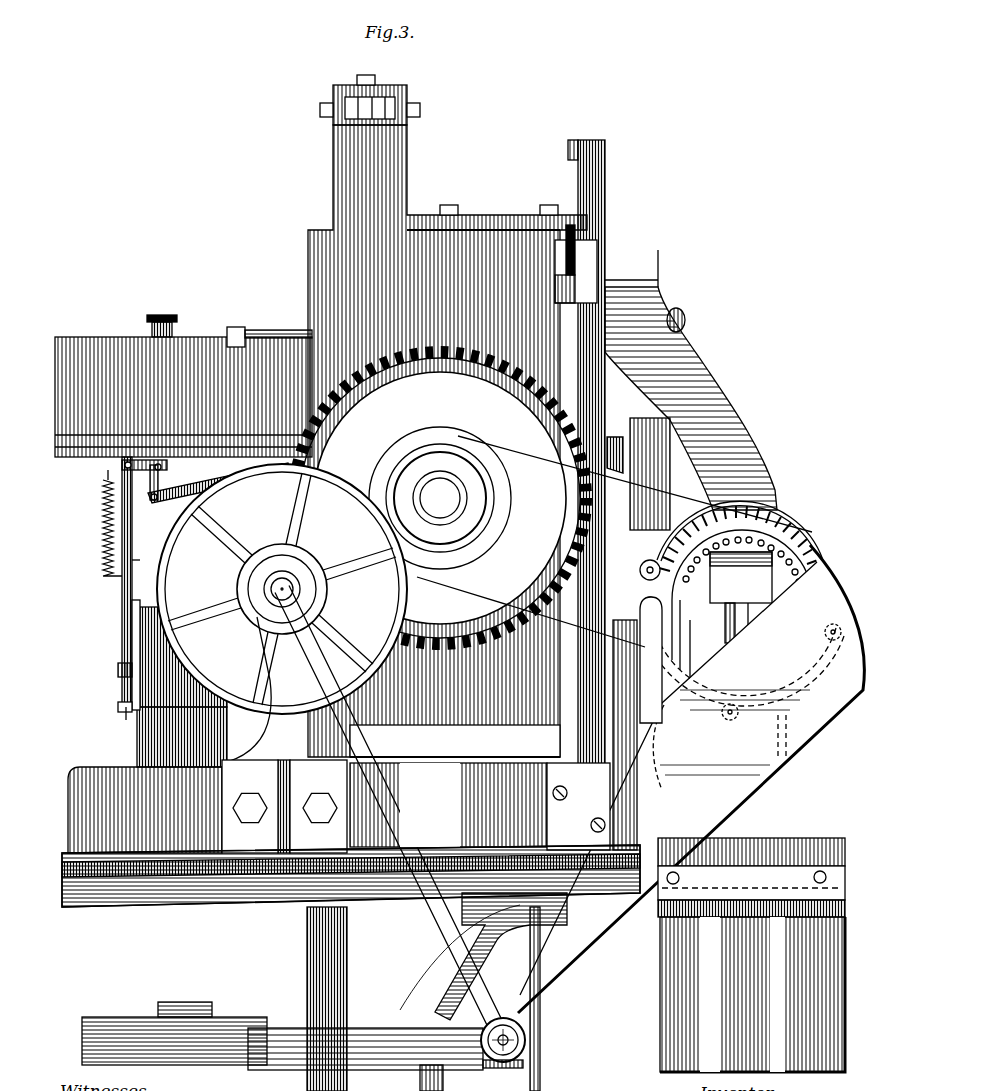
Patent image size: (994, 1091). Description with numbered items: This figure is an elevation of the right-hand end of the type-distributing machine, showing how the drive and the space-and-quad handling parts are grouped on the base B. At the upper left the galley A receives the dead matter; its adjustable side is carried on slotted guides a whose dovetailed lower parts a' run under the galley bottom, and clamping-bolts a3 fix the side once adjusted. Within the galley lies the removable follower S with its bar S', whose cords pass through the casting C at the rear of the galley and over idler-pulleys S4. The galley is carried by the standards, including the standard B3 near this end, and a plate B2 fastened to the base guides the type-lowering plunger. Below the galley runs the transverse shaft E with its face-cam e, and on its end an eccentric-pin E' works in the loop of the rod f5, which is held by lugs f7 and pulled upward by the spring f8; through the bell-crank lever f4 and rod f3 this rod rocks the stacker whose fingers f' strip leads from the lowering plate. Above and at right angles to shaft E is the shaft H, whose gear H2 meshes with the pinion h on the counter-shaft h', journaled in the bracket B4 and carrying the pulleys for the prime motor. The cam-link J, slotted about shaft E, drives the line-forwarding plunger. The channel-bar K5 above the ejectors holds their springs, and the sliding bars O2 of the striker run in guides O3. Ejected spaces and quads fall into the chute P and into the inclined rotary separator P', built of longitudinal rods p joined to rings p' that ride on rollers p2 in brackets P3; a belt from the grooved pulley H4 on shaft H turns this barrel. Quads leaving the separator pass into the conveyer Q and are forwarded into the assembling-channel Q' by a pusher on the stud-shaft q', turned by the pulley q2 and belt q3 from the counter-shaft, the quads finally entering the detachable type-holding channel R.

The gear H2 is at (432, 660).
The standard B3 is at (455, 730).
The channel-bar K5 is at (387, 90).
The guides O3 is at (604, 166).
The sliding bars O2 is at (586, 148).
The casting C is at (585, 250).
The chute P is at (691, 380).
The idler-pulleys S4 is at (687, 306).
The plate B2 is at (605, 420).
The inclined rotary separator P' is at (740, 582).
The longitudinal rods or bars p is at (769, 584).
The conveyer Q is at (691, 779).
The rollers p2 is at (640, 593).
The brackets P3 is at (676, 720).
The rings p' is at (636, 585).
The cam-link J is at (637, 682).
The shaft H is at (440, 498).
The grooved pulley H4 is at (614, 532).
The galley A is at (183, 383).
The clamping-bolts a3 is at (172, 312).
The bar S' is at (238, 325).
The follower S is at (278, 322).
The shaft E is at (174, 612).
The eccentric-pin E' is at (118, 655).
The spring f8 is at (98, 523).
The fingers f' is at (144, 445).
The bell-crank lever f4 is at (171, 474).
The rod f3 is at (220, 486).
The rod f5 is at (128, 565).
The slotted guides a is at (116, 654).
The lower parts of guides a' is at (111, 712).
The lugs f7 is at (126, 720).
The face-cam e is at (262, 518).
The pinion h is at (288, 589).
The counter-shaft h' is at (248, 645).
The base B is at (145, 810).
The bracket B4 is at (284, 802).
The belt q3 is at (480, 784).
The detachable type-holding channel R is at (252, 1018).
The assembling-channel Q' is at (365, 1036).
The stud-shaft q' is at (496, 1054).
The pulley q2 is at (503, 1075).